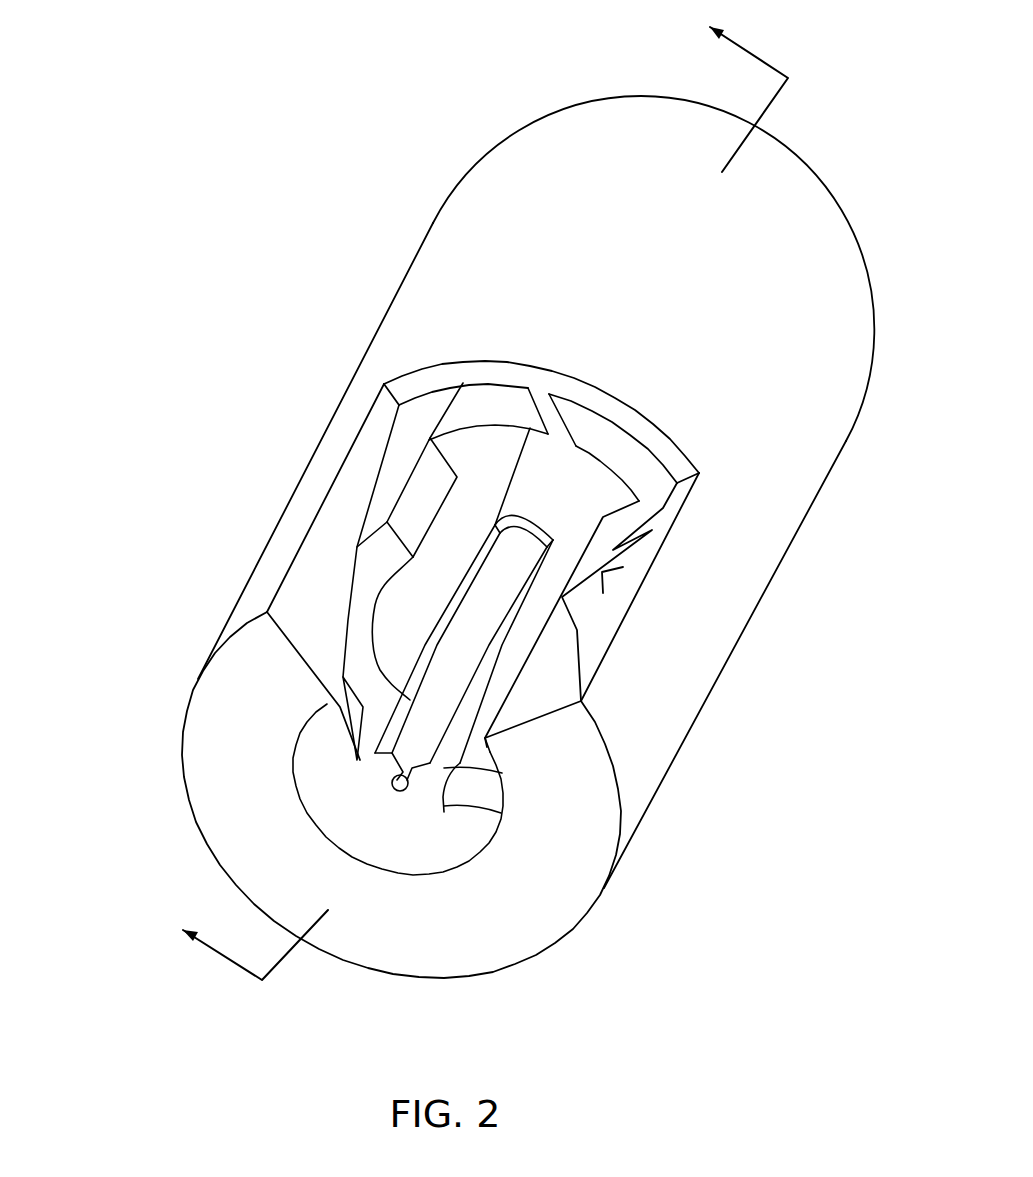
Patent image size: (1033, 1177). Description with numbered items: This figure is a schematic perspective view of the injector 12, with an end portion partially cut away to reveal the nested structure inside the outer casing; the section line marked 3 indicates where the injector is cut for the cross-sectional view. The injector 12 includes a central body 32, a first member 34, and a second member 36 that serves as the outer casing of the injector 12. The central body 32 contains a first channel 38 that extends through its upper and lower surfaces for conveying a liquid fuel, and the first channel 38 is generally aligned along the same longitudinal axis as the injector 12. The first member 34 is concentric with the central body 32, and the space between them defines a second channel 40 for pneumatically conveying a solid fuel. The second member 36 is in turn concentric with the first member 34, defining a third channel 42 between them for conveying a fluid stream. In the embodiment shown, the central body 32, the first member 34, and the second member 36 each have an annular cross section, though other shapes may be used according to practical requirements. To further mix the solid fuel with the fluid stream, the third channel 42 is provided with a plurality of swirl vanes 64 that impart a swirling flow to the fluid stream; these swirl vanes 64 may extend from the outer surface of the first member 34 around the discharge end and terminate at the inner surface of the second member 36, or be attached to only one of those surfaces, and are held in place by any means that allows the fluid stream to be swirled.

The injector 12 is at (212, 103).
The section line 3- 3 is at (472, 492).
The central body 32 is at (375, 790).
The first member 34 is at (420, 489).
The second member 36 is at (587, 847).
The first channel 38 is at (497, 595).
The second channel 40 is at (403, 600).
The third channel 42 is at (427, 850).
The swirl vanes 64 is at (552, 413).